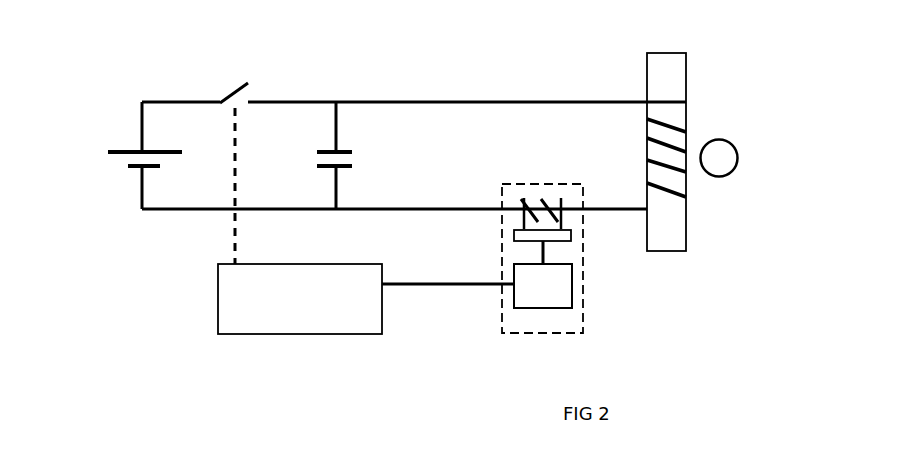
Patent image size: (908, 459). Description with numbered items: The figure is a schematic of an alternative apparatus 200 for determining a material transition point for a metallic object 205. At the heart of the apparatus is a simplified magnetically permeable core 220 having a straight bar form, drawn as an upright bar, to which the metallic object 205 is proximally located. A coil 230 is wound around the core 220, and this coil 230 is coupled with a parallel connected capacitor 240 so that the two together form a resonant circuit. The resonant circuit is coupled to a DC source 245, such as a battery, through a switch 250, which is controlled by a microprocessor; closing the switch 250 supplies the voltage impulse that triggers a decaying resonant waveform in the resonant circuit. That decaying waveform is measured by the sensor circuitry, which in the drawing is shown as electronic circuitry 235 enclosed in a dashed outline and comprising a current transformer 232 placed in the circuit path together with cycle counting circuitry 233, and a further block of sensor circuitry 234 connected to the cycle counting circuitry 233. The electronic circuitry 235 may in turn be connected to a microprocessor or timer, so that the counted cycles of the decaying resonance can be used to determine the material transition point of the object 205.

The apparatus 200 is at (863, 29).
The metallic object 205 is at (738, 152).
The magnetically permeable core 220 is at (686, 78).
The coil 230 is at (635, 140).
The current transformer 232 is at (575, 220).
The cycle counting circuitry 233 is at (574, 270).
The sensor circuitry 234 is at (226, 309).
The electronic circuitry 235 is at (512, 296).
The capacitor 240 is at (366, 156).
The DC source 245 is at (120, 167).
The switch 250 is at (245, 84).